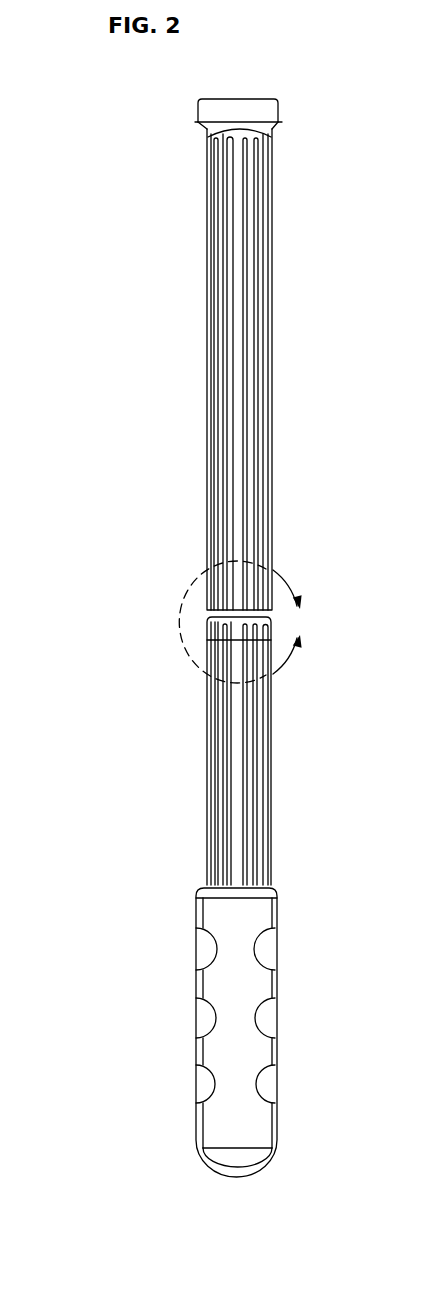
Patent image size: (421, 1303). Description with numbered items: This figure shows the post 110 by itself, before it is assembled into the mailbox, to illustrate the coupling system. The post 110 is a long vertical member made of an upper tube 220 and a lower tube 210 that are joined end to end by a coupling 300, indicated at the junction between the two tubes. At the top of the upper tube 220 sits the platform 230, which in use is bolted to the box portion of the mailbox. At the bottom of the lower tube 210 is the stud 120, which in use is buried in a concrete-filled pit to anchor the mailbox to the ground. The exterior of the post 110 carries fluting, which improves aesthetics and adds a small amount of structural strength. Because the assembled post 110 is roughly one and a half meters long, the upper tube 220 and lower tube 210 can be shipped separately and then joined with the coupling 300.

The post 110 is at (112, 266).
The stud 120 is at (257, 992).
The lower tube 210 is at (258, 764).
The upper tube 220 is at (258, 270).
The platform 230 is at (268, 99).
The coupling 300 is at (252, 622).